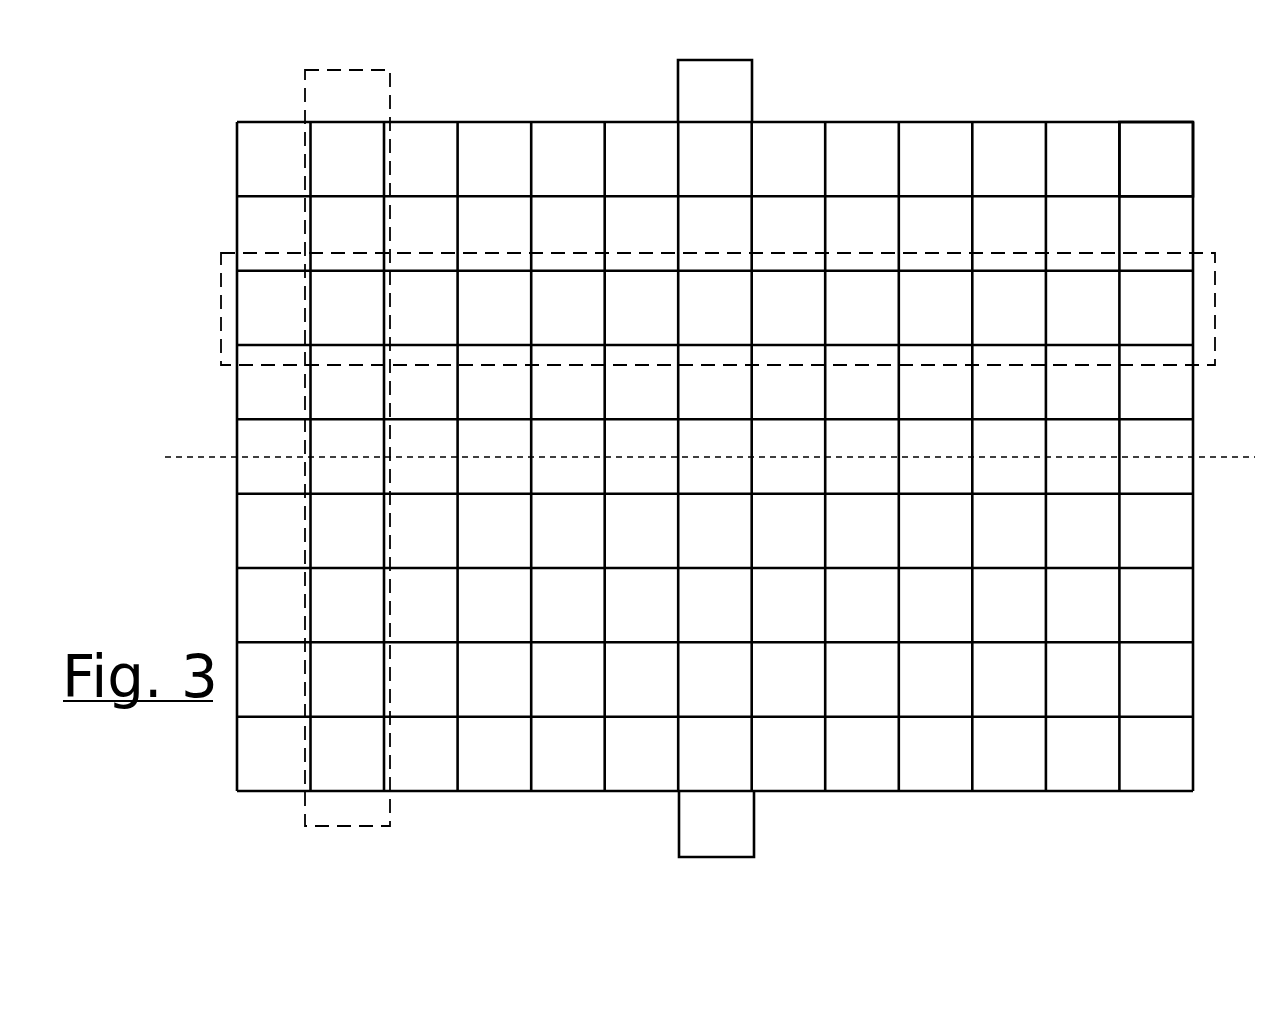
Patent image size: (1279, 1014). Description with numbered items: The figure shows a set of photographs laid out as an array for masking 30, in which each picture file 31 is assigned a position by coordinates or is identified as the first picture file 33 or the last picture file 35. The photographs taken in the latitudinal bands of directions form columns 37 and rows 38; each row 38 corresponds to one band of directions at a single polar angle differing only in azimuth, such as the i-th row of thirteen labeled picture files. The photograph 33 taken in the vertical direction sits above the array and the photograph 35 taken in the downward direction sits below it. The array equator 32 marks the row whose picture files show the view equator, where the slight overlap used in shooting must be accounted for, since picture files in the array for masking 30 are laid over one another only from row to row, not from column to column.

The array for masking 30 is at (148, 335).
The picture file 31 is at (1187, 140).
The array equator 32 is at (178, 456).
The first picture file 33 is at (713, 78).
The last picture file 35 is at (722, 848).
The column 37 is at (352, 70).
The row 38 is at (1216, 291).